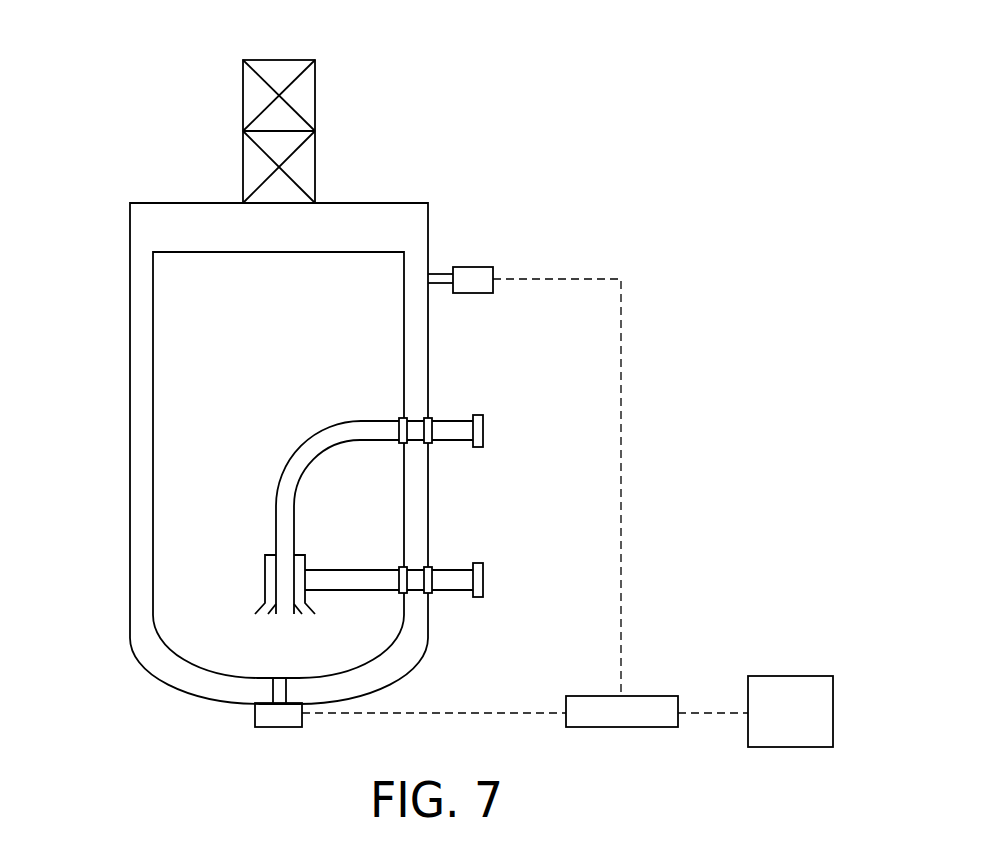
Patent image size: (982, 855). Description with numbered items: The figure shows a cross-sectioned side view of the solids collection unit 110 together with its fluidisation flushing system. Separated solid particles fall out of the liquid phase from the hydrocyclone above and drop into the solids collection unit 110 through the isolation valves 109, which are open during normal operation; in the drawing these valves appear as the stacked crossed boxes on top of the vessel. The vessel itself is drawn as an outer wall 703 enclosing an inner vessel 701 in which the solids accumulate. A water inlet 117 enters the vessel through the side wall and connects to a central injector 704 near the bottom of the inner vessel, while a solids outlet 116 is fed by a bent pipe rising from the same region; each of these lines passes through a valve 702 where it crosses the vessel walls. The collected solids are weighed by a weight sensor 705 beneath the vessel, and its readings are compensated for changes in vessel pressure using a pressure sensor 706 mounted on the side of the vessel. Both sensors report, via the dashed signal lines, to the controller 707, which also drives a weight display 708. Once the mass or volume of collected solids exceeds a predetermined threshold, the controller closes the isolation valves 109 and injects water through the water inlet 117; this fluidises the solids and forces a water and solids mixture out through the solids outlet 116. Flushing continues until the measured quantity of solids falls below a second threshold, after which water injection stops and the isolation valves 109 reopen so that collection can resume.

The isolation valves 109 is at (331, 67).
The solids collection unit 110 is at (547, 30).
The solids outlet 116 is at (494, 430).
The water inlet 117 is at (493, 579).
The inner vessel 701 is at (149, 362).
The valve 702 is at (424, 414).
The outer vessel jacket 703 is at (102, 220).
The injector sleeve / sparger 704 is at (254, 577).
The weight sensor 705 is at (252, 713).
The pressure sensor 706 is at (499, 262).
The controller 707 is at (653, 689).
The weight display 708 is at (803, 671).